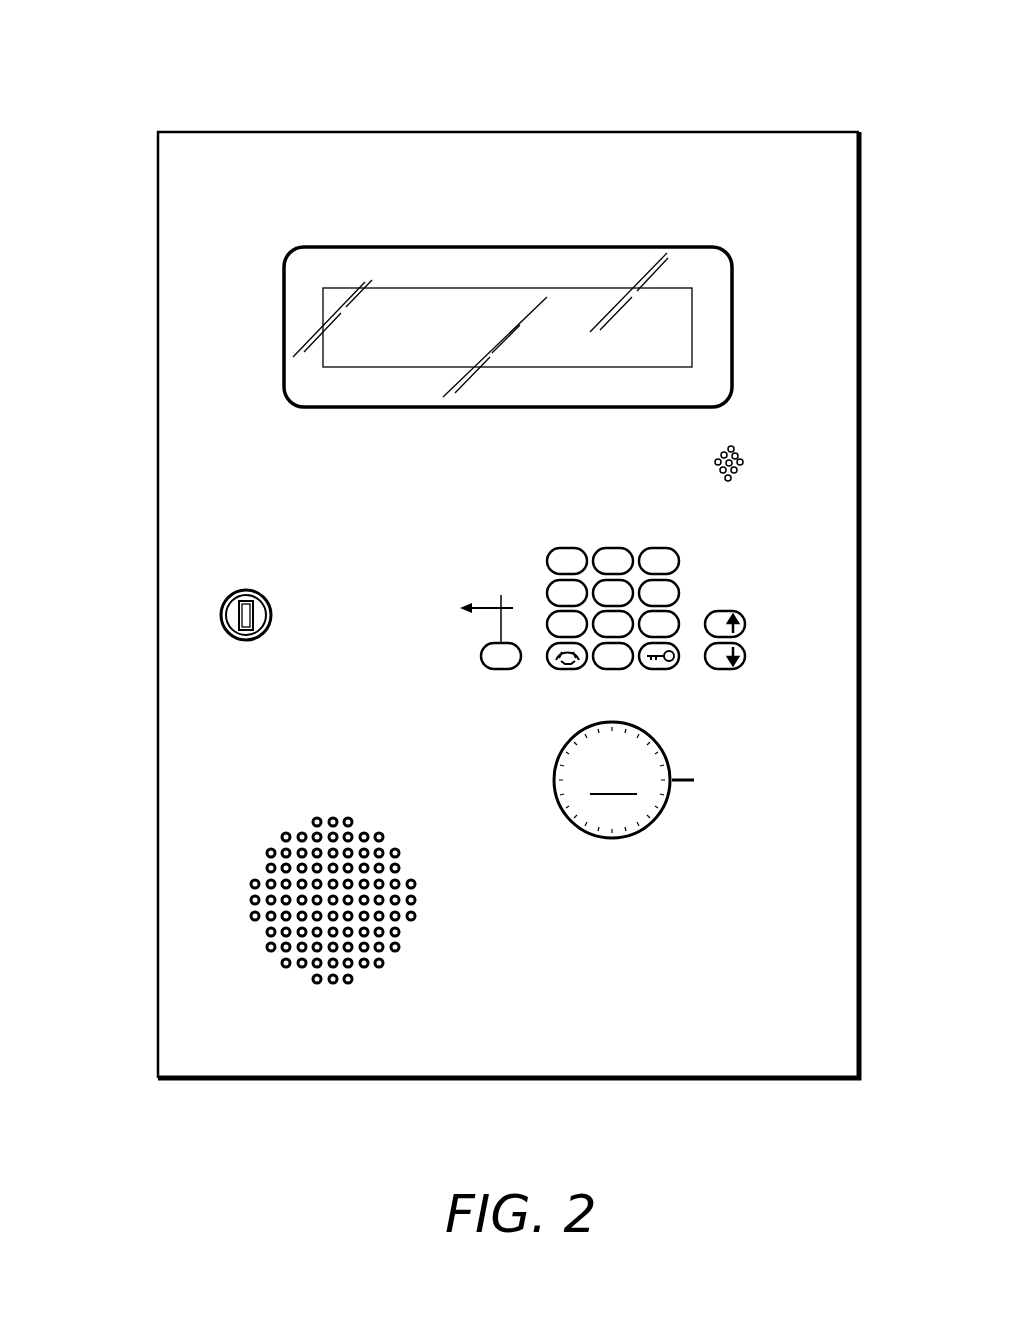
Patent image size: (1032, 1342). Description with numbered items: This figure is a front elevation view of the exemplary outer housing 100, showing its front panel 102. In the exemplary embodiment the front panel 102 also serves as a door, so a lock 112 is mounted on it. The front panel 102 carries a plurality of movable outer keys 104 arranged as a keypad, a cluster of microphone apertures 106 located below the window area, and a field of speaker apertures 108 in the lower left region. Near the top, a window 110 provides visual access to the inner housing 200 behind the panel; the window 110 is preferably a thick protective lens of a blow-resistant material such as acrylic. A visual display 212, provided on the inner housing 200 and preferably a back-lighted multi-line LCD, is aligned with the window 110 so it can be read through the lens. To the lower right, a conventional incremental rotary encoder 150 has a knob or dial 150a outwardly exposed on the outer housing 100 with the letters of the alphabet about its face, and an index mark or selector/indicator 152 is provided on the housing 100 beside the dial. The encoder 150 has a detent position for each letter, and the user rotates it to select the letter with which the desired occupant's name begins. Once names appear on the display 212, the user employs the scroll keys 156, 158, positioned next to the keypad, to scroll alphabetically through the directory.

The outer housing 100 is at (100, 104).
The front panel 102 is at (593, 152).
The movable outer keys 104 is at (722, 556).
The microphone apertures 106 is at (742, 463).
The speaker apertures 108 is at (252, 884).
The window 110 is at (732, 353).
The lock 112 is at (223, 603).
The incremental rotary encoder 150 is at (743, 780).
The knob or dial 150a is at (612, 780).
The index mark or selector/indicator 152 is at (684, 780).
The scroll key 156 is at (745, 624).
The scroll key 158 is at (745, 656).
The inner housing 200 is at (705, 276).
The visual display 212 is at (595, 300).